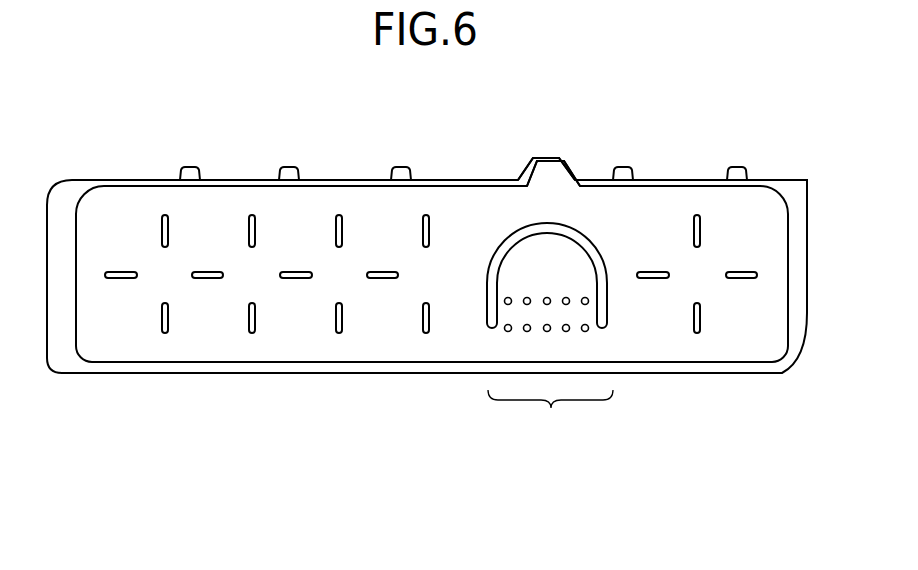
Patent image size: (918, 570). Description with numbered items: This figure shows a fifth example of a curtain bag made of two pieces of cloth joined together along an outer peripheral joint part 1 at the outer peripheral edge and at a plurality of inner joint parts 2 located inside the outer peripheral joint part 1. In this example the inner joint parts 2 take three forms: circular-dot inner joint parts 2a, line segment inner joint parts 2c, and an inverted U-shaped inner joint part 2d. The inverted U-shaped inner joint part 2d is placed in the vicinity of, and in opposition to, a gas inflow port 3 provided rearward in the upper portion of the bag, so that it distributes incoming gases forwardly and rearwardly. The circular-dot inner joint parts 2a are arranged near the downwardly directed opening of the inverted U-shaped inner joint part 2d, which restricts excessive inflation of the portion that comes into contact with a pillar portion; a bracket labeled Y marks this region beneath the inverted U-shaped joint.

The outer peripheral joint part 1 is at (245, 187).
The gas inflow port 3 is at (552, 168).
The inner joint parts 2 is at (431, 354).
The line segment inner joint part 2c is at (422, 316).
The inverted U-shaped inner joint part 2d is at (486, 310).
The inner joint part of a shape of a circular dot 2a is at (506, 330).
The region Y is at (550, 416).